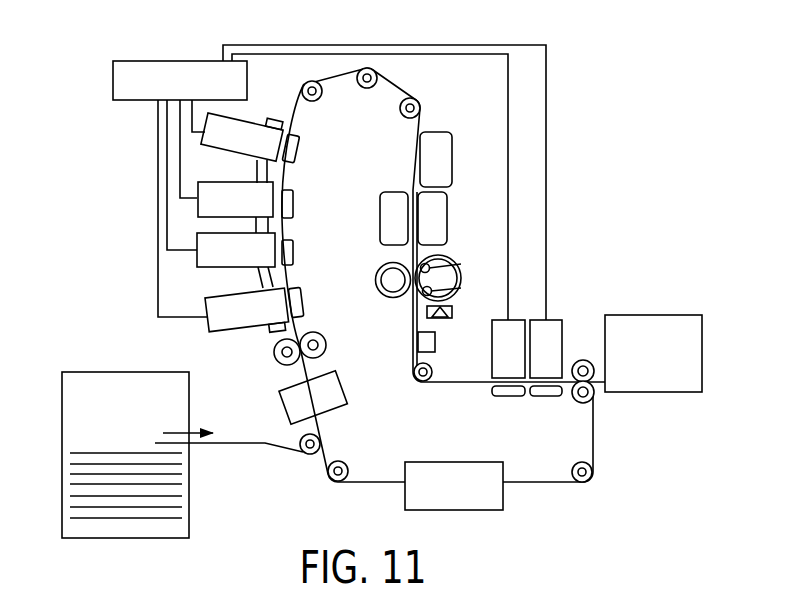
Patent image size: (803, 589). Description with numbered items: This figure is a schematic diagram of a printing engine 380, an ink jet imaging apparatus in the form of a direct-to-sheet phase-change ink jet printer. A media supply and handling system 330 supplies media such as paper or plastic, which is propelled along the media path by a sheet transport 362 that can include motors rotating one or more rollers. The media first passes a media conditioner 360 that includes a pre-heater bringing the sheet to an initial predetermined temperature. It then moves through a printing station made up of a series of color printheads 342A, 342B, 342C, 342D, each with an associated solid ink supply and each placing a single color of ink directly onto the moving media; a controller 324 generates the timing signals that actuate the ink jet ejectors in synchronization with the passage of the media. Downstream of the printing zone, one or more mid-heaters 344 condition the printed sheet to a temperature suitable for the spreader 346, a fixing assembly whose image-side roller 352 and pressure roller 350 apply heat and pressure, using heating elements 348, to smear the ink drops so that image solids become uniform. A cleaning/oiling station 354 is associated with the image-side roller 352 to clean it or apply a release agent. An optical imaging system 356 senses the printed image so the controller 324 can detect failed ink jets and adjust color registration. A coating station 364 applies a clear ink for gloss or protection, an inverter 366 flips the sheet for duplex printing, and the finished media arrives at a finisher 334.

The controller 324 is at (172, 61).
The media supply and handling system 330 is at (100, 371).
The finisher 334 is at (652, 314).
The printhead 342A is at (208, 323).
The printhead 342B is at (197, 262).
The printhead 342C is at (197, 214).
The printhead 342D is at (202, 136).
The mid-heater 344 is at (379, 210).
The spreader 346 is at (472, 243).
The heating elements 348 is at (463, 286).
The pressure roller 350 is at (373, 300).
The image-side roller 352 is at (473, 292).
The cleaning/oiling station 354 is at (438, 319).
The optical imaging system 356 is at (417, 340).
The media conditioner 360 is at (288, 400).
The sheet transport 362 is at (403, 364).
The coating station 364 is at (563, 310).
The inverter 366 is at (504, 489).
The printing engine 380 is at (118, 203).